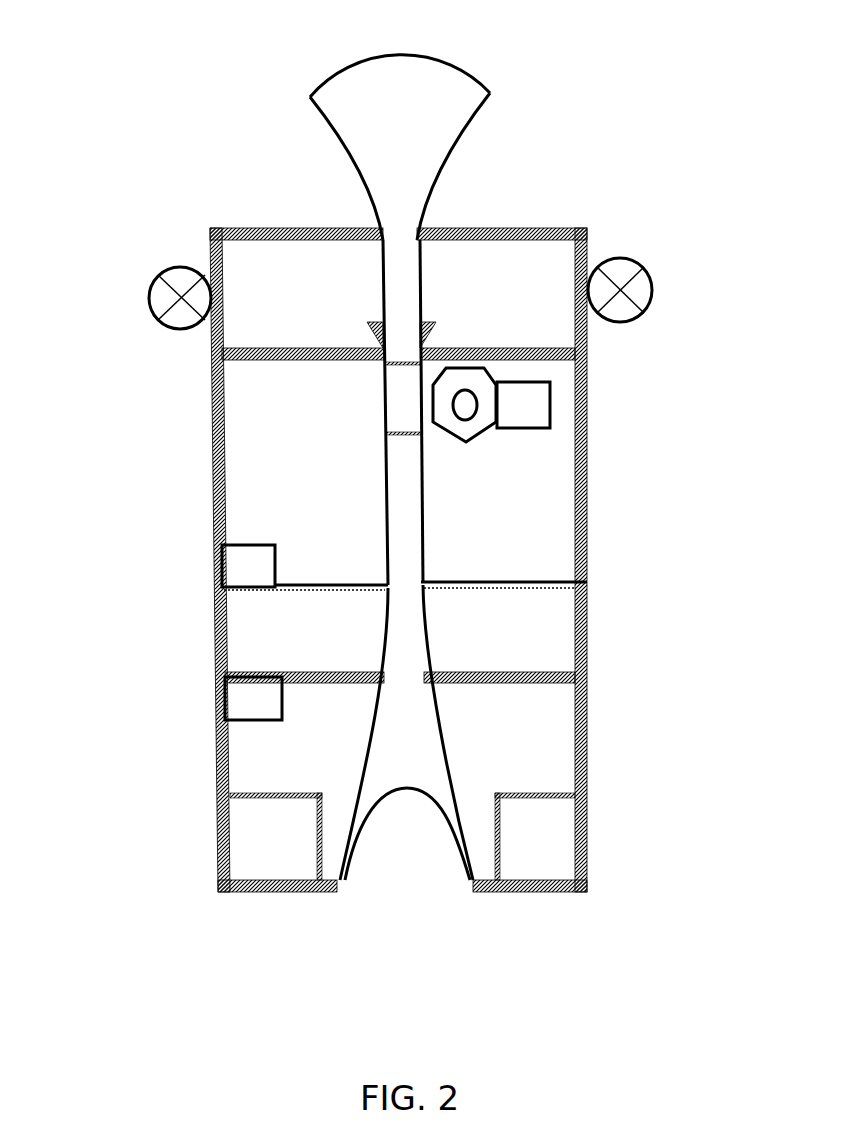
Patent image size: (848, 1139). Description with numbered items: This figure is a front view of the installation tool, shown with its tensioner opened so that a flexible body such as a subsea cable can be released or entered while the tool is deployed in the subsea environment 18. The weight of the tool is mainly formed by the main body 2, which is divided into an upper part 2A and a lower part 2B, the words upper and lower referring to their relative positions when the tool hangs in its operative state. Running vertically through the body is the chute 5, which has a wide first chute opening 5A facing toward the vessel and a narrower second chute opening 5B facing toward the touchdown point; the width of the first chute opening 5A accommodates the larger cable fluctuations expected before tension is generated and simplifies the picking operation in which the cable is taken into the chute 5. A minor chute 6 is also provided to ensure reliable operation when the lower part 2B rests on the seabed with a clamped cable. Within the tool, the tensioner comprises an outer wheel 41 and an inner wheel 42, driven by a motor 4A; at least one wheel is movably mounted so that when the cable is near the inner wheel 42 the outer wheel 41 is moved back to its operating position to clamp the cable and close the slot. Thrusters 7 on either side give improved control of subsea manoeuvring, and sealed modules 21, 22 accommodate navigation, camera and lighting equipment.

The main body 2 is at (145, 127).
The upper part of the installation tool 2A is at (273, 230).
The lower part of the installation tool 2B is at (265, 887).
The chute 5 is at (408, 506).
The first chute opening 5A is at (467, 140).
The second chute opening 5B is at (443, 880).
The minor chute 6 is at (432, 328).
The thrusters 7 is at (148, 287).
The outer wheel 41 is at (473, 440).
The inner wheel 42 is at (403, 437).
The motor 4A is at (523, 406).
The sealed module 21 is at (404, 567).
The sealed module 22 is at (400, 696).
The subsea environment 18 is at (690, 530).